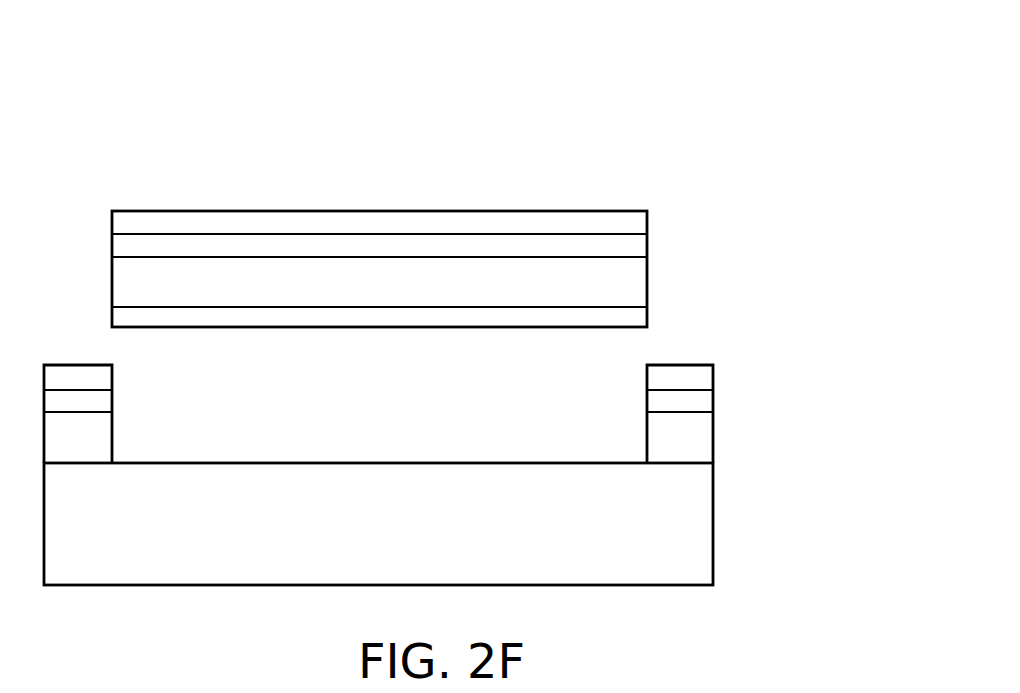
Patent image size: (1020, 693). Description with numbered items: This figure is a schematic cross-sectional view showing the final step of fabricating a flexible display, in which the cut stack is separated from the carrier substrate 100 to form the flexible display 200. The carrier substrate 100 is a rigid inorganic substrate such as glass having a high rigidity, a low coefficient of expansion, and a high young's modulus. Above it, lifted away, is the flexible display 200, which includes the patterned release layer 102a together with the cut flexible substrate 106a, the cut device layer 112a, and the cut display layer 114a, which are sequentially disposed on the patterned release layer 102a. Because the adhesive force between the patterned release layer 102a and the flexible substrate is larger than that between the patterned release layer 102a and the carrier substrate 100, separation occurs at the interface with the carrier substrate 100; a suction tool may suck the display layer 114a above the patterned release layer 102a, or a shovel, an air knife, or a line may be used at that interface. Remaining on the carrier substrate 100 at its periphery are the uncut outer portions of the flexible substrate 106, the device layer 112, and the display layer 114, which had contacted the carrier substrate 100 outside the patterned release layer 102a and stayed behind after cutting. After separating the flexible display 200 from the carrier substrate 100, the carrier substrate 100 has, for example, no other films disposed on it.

The carrier substrate 100 is at (716, 523).
The flexible substrate 106 is at (702, 447).
The device layer 112 is at (702, 404).
The display layer 114 is at (702, 379).
The patterned release layer 102a is at (633, 317).
The flexible substrate 106a is at (633, 280).
The device layer 112a is at (633, 245).
The display layer 114a is at (633, 223).
The flexible display 200 is at (827, 65).